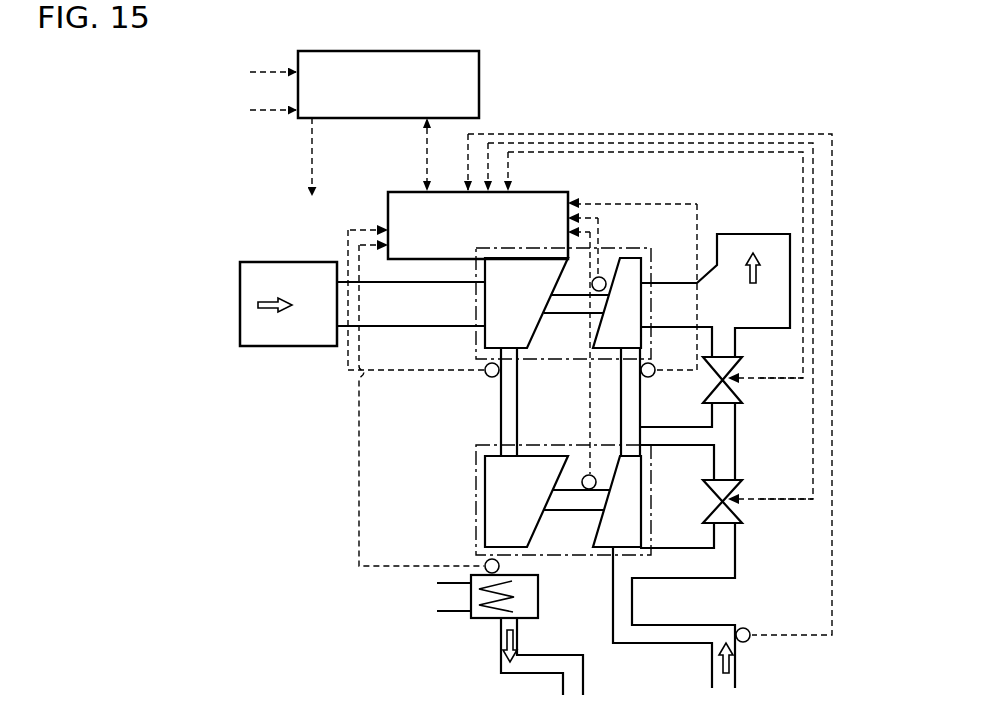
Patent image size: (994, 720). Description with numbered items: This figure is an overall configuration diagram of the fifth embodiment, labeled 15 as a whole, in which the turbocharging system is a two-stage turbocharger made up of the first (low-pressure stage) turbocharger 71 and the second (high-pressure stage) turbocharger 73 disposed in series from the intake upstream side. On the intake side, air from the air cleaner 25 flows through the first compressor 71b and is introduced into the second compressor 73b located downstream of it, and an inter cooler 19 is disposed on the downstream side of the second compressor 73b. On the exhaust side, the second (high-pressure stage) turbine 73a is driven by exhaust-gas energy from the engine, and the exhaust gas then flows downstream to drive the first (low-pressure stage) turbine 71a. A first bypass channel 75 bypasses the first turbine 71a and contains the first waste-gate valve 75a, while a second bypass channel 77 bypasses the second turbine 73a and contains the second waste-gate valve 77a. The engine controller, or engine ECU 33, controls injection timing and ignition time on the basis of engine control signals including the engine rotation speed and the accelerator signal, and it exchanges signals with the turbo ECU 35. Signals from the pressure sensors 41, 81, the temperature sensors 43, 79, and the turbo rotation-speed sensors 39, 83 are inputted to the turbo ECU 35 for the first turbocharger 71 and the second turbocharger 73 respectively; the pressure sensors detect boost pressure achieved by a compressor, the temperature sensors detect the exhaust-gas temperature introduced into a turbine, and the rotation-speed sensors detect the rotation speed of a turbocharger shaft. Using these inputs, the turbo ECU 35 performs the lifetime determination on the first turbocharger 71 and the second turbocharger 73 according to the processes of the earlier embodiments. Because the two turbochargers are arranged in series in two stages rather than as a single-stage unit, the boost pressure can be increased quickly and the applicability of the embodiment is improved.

The engine system 15 is at (444, 348).
The inter cooler 19 is at (487, 618).
The air cleaner 25 is at (302, 346).
The engine controller (engine ECU) 33 is at (479, 80).
The turbo ECU 35 is at (568, 196).
The turbo rotation speed sensor 39 is at (603, 277).
The pressure sensor 41 is at (485, 372).
The temperature sensor 43 is at (748, 643).
The first (low-pressure stage) turbocharger 71 is at (476, 273).
The first (low-pressure stage) turbine 71a is at (641, 268).
The first compressor 71b is at (483, 303).
The second (high-pressure stage) turbocharger 73 is at (475, 474).
The second (high-pressure stage) turbine 73a is at (652, 470).
The second compressor 73b is at (483, 513).
The first bypass channel 75 is at (685, 427).
The first waste-gate valve 75a is at (742, 393).
The second bypass channel 77 is at (686, 548).
The second waste-gate valve 77a is at (742, 513).
The temperature sensor 79 is at (650, 377).
The pressure sensor 81 is at (485, 563).
The turbo rotation-speed sensor 83 is at (588, 475).